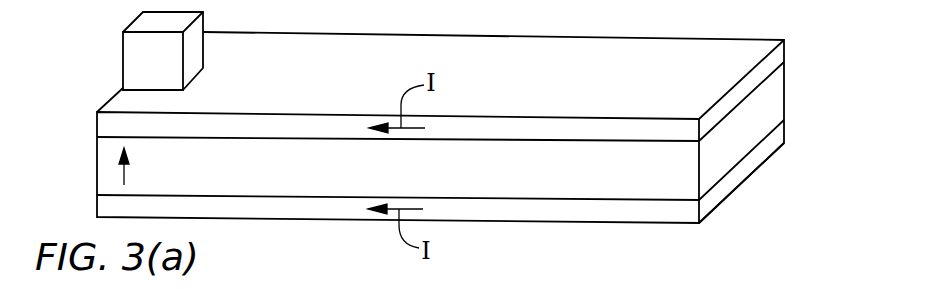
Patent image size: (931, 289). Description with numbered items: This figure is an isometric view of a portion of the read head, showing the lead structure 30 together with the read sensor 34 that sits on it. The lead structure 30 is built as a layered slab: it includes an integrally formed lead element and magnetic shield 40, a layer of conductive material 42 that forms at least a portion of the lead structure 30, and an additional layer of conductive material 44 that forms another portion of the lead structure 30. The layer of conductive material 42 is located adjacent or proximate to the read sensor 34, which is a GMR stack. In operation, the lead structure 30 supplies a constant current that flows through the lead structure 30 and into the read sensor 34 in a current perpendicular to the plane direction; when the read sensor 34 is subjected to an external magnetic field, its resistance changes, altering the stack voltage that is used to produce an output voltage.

The lead structure 30 is at (92, 113).
The read sensor 34 is at (133, 61).
The layer of conductive material 42 is at (783, 53).
The integrally formed lead element and magnetic shield 40 is at (783, 103).
The additional layer of conductive material 44 is at (783, 135).